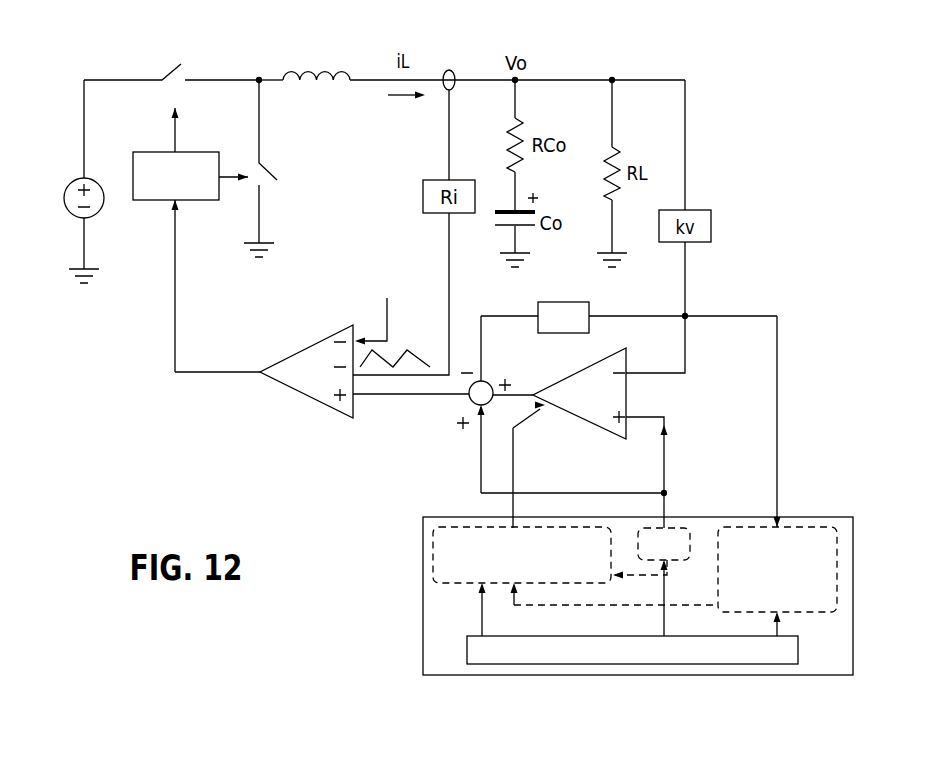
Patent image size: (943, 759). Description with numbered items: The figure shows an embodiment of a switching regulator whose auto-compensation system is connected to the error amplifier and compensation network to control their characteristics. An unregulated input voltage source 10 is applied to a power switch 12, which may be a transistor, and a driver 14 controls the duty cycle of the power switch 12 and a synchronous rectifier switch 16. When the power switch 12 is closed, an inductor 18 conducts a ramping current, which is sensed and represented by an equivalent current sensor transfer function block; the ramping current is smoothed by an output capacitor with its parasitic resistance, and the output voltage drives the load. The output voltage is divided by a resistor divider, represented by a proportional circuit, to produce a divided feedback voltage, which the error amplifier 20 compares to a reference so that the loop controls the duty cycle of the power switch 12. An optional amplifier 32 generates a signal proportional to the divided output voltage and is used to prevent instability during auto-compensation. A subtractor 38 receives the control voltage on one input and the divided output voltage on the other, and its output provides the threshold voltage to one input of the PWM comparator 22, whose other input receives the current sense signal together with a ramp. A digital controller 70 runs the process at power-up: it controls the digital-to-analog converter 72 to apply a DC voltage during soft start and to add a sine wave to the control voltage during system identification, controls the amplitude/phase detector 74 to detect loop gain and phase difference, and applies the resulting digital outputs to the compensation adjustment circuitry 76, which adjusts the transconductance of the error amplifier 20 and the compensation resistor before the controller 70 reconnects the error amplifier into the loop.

The input voltage source 10 is at (73, 178).
The power switch 12 is at (170, 67).
The driver 14 is at (151, 147).
The synchronous rectifier switch 16 is at (279, 177).
The inductor 18 is at (326, 66).
The error amplifier 20 is at (636, 394).
The PWM comparator 22 is at (311, 338).
The amplifier 32 is at (573, 300).
The subtractor 38 is at (468, 404).
The digital controller 70 is at (467, 655).
The digital-to-analog converter 72 is at (680, 528).
The amplitude/phase detector 74 is at (820, 527).
The compensation adjustment circuitry 76 is at (433, 553).